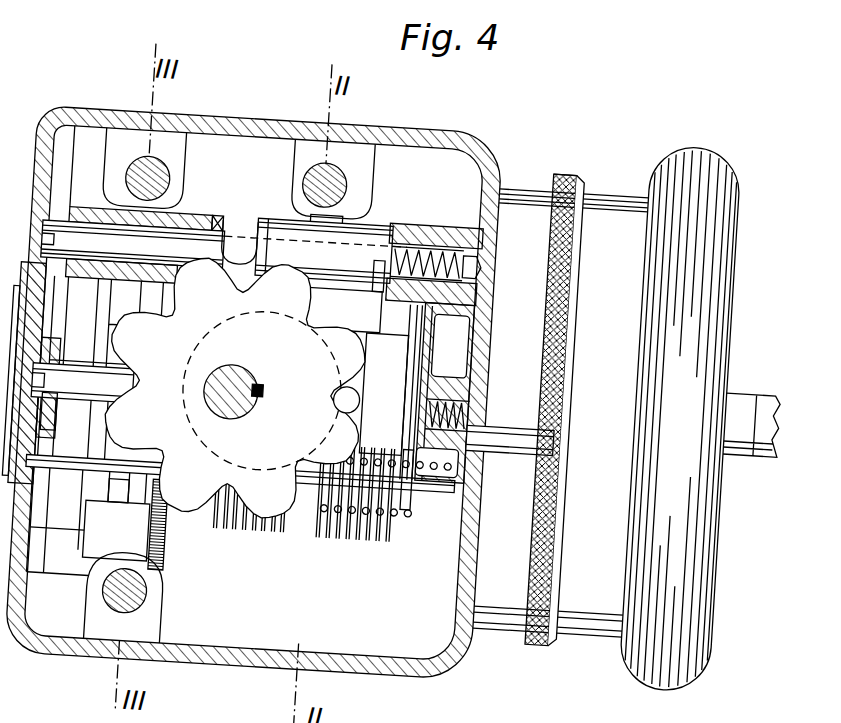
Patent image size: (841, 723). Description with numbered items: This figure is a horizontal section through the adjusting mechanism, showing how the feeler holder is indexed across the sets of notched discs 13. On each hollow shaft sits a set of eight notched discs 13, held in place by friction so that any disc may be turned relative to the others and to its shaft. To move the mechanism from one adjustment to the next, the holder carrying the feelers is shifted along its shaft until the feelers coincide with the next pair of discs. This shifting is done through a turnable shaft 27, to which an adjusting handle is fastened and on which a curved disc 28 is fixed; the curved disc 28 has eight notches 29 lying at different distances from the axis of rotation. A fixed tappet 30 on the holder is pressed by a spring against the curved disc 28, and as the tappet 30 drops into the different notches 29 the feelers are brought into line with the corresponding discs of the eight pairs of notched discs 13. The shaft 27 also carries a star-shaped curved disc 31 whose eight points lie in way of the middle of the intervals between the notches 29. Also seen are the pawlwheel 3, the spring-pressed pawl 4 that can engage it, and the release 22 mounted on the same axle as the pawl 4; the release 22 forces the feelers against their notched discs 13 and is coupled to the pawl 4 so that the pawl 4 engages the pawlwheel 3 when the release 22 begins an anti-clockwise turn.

The pawlwheel 3 is at (165, 558).
The pawl 4 is at (188, 224).
The notched discs 13 is at (271, 532).
The release 22 is at (282, 238).
The turnable shaft 27 is at (238, 411).
The curved disc 28 is at (290, 332).
The notches 29 is at (192, 389).
The tappet 30 is at (353, 402).
The star-shaped curved disc 31 is at (186, 271).